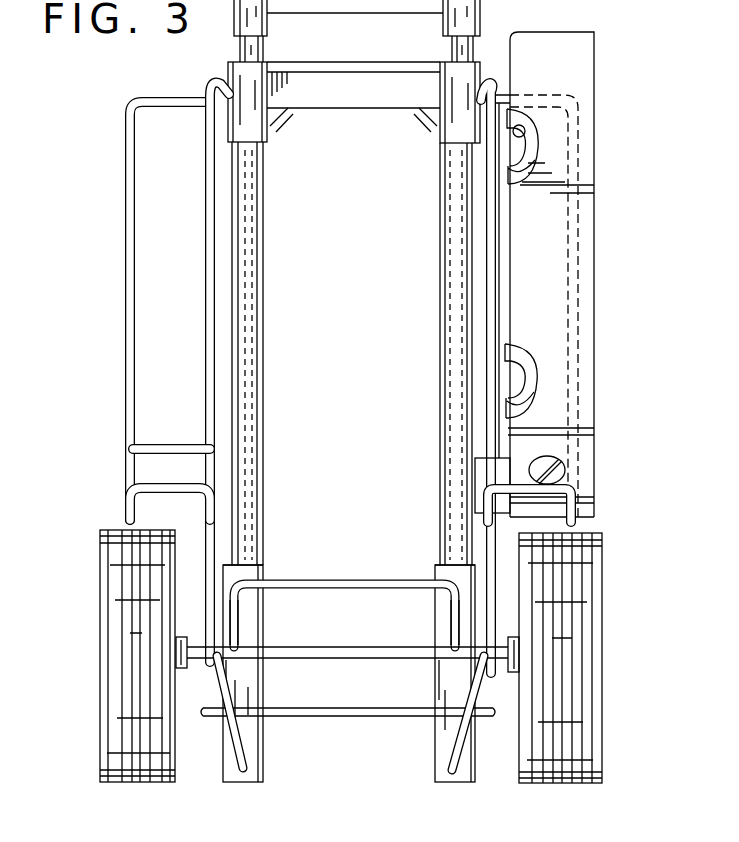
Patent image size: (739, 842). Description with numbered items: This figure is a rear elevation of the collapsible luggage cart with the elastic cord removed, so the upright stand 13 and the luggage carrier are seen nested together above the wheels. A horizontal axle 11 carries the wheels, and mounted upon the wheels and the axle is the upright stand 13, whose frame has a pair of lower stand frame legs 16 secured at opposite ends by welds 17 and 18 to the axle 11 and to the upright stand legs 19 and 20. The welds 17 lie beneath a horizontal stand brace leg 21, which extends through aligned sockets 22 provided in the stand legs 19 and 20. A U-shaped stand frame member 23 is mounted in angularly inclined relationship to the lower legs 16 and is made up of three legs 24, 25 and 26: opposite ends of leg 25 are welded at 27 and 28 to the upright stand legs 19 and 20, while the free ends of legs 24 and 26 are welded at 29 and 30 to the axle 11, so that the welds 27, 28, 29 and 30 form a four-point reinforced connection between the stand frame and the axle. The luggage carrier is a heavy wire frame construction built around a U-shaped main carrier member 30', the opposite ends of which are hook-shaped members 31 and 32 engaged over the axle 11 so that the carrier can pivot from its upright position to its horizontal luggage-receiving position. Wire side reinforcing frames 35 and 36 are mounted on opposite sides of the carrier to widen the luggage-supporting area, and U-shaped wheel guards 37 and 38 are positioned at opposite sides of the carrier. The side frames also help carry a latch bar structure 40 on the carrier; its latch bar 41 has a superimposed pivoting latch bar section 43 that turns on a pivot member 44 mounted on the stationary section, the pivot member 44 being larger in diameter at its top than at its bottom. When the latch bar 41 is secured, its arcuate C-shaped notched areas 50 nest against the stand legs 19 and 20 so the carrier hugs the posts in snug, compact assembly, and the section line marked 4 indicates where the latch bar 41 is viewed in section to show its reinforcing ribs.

The section line 4- 4 is at (430, 143).
The horizontal axle 11 is at (343, 654).
The upright stand 13 is at (262, 366).
The lower stand frame legs 16 is at (250, 763).
The weld 17 is at (452, 778).
The weld 18 is at (473, 674).
The upright stand leg 19 is at (268, 576).
The upright stand leg 20 is at (435, 573).
The horizontal stand brace leg 21 is at (297, 709).
The sockets 22 is at (266, 717).
The U-shaped stand frame member 23 is at (371, 596).
The stand frame leg 24 is at (233, 613).
The frame leg 25 is at (320, 580).
The stand frame leg 26 is at (460, 613).
The weld 27 is at (234, 588).
The weld 28 is at (457, 558).
The weld 29 is at (240, 641).
The weld 30 is at (430, 630).
The U-shaped main carrier member 30' is at (185, 330).
The hook-shaped member 31 is at (209, 668).
The hook-shaped member 32 is at (490, 675).
The wire side reinforcing frame 35 is at (124, 396).
The wire side reinforcing frame 36 is at (489, 352).
The U-shaped wheel guard 37 is at (180, 489).
The U-shaped wheel guard 38 is at (576, 497).
The latch bar structure 40 is at (594, 347).
The latch bar 41 is at (594, 224).
The superimposed pivoting latch bar section 43 is at (590, 263).
The pivot member 44 is at (562, 464).
The arcuate C-shaped notched area 50 is at (520, 131).